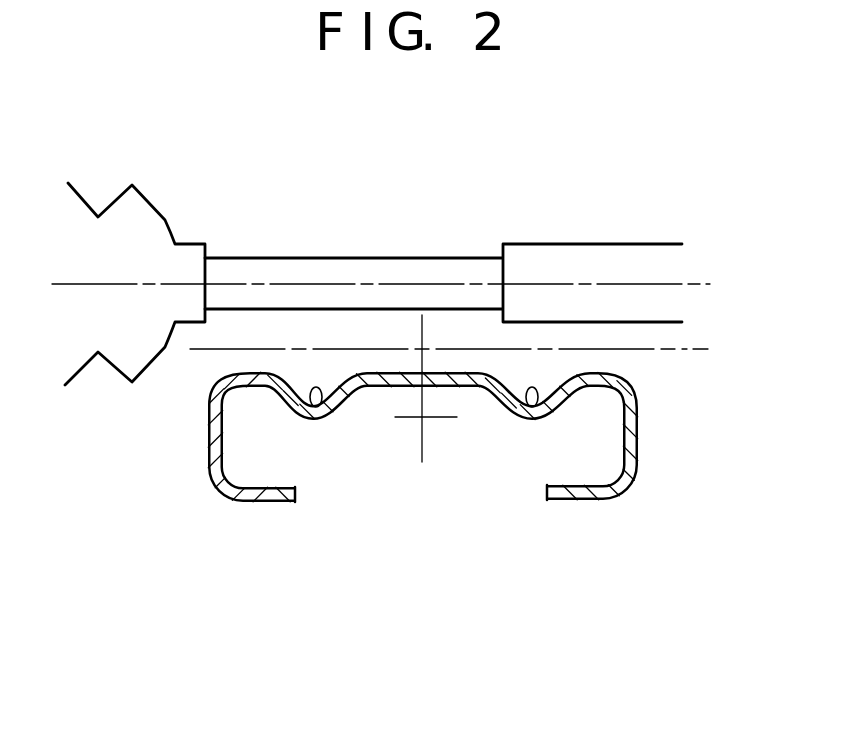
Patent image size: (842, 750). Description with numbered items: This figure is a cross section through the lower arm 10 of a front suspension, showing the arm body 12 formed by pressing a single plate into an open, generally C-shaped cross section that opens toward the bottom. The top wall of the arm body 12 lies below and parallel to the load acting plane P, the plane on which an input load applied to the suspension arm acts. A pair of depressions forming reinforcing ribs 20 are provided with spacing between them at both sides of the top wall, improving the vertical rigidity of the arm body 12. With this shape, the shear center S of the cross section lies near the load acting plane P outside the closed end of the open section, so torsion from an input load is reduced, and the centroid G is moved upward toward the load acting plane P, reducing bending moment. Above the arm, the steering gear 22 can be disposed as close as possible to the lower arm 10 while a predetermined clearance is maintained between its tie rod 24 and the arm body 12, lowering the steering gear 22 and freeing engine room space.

The lower arm 10 is at (218, 495).
The arm body 12 is at (210, 442).
The reinforcing ribs 20 is at (323, 408).
The steering gear 22 is at (143, 196).
The tie rod 24 is at (281, 266).
The shear center S is at (422, 350).
The centroid G is at (419, 419).
The load acting plane P is at (658, 350).